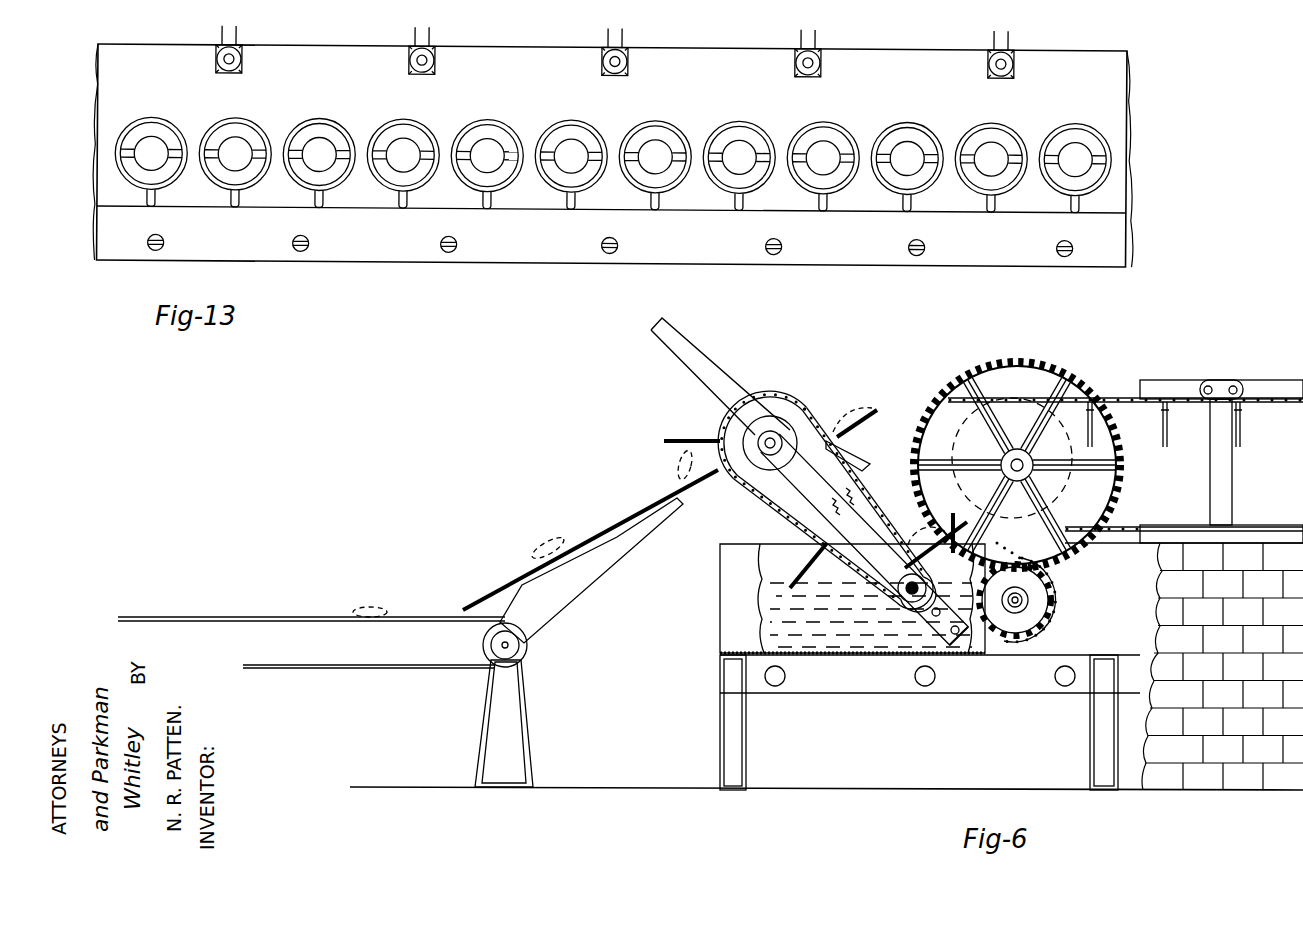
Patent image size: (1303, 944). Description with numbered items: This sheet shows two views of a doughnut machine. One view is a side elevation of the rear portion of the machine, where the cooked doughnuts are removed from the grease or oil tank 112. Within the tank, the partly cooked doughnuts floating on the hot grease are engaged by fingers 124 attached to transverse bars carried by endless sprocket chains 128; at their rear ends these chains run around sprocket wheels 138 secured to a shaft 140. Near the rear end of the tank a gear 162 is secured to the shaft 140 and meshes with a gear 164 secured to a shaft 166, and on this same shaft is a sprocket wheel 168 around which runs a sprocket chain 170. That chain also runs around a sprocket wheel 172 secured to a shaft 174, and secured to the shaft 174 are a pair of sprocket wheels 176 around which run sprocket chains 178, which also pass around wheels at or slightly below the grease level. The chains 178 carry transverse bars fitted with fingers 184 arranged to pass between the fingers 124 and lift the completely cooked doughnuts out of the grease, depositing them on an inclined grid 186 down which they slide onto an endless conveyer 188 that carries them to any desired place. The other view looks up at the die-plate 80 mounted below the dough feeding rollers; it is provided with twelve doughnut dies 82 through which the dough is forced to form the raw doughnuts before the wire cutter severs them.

In FIG. 13, the die-plate 80 is at (538, 60).
In FIG. 13, the doughnut dies 82 is at (600, 123).
In FIG. 6, the grease or oil tank 112 is at (740, 617).
In FIG. 6, the fingers 124 is at (1241, 443).
In FIG. 6, the endless sprocket chains 128 is at (1117, 398).
In FIG. 6, the sprocket wheels 138 is at (1020, 412).
In FIG. 6, the shaft 140 is at (1023, 470).
In FIG. 6, the gear 162 is at (950, 388).
In FIG. 6, the gear 164 is at (1005, 634).
In FIG. 6, the shaft 166 is at (1028, 607).
In FIG. 6, the sprocket wheel 168 is at (1035, 595).
In FIG. 6, the sprocket chain 170 is at (863, 465).
In FIG. 6, the sprocket wheel 172 is at (783, 430).
In FIG. 6, the shaft 174 is at (768, 446).
In FIG. 6, the sprocket wheels 176 is at (765, 410).
In FIG. 6, the sprocket chains 178 is at (786, 518).
In FIG. 6, the fingers 184 is at (800, 578).
In FIG. 6, the inclined grid 186 is at (603, 532).
In FIG. 6, the endless conveyer 188 is at (290, 616).